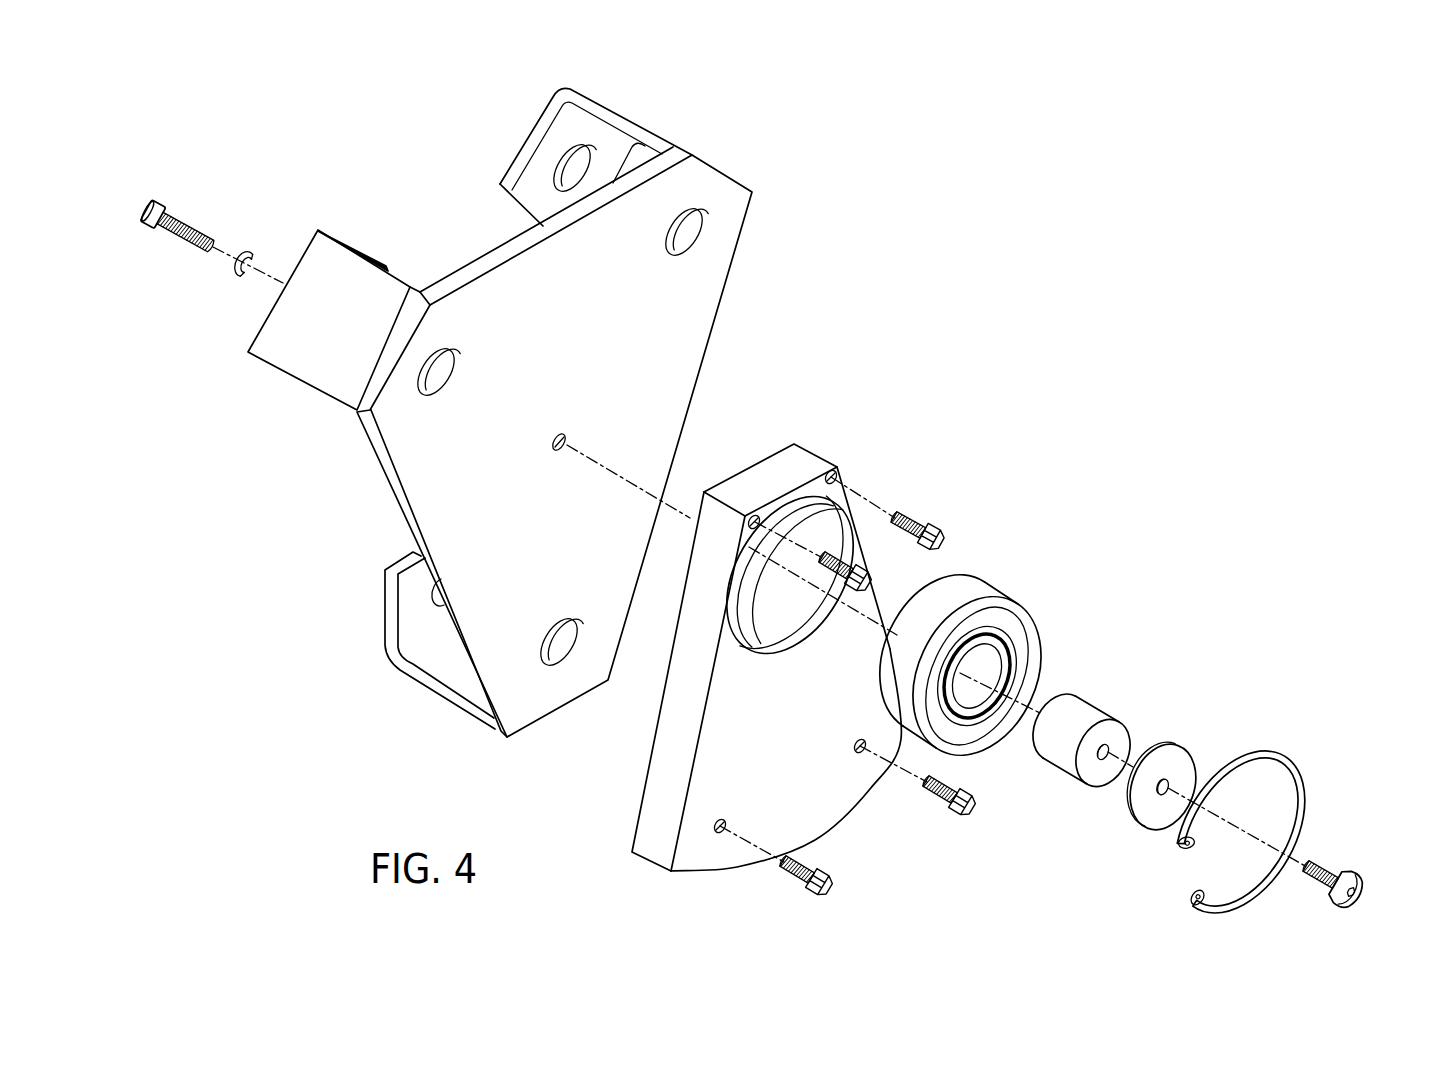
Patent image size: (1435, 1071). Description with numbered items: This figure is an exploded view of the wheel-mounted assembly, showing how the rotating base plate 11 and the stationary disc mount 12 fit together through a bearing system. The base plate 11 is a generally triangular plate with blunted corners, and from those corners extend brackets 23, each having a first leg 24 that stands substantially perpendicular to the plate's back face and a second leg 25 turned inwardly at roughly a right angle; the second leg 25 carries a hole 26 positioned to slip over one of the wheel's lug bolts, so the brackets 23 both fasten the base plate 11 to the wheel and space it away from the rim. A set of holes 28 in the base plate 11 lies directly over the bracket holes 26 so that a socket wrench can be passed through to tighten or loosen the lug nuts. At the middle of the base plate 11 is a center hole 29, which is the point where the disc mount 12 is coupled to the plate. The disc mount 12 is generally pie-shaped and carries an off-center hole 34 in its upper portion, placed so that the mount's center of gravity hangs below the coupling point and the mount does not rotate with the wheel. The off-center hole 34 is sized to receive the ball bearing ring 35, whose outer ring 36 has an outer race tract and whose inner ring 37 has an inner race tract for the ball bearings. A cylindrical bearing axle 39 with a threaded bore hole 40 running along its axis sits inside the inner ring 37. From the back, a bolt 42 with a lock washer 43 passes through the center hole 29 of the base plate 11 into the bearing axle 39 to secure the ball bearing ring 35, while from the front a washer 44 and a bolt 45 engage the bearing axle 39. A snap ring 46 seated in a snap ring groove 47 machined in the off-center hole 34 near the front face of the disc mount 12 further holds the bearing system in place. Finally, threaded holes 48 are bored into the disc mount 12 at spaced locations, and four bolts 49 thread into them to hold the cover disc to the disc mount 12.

The base plate 11 is at (556, 333).
The disc mount 12 is at (768, 779).
The bracket 23 is at (551, 96).
The first leg 24 is at (650, 128).
The second leg 25 is at (520, 160).
The hole 26 is at (571, 182).
The hole 28 is at (684, 247).
The center hole 29 is at (557, 452).
The off-center hole 34 is at (857, 553).
The ball bearing ring 35 is at (979, 646).
The outer ring 36 is at (1033, 627).
The inner ring 37 is at (1024, 662).
The bearing axle 39 is at (1091, 711).
The threaded bore hole 40 is at (1105, 760).
The bolt 42 is at (148, 210).
The lock washer 43 is at (252, 254).
The washer 44 is at (1192, 758).
The bolt 45 is at (1363, 885).
The snap ring 46 is at (1302, 797).
The snap ring groove 47 is at (804, 648).
The threaded hole 48 is at (838, 476).
The bolt 49 is at (952, 541).